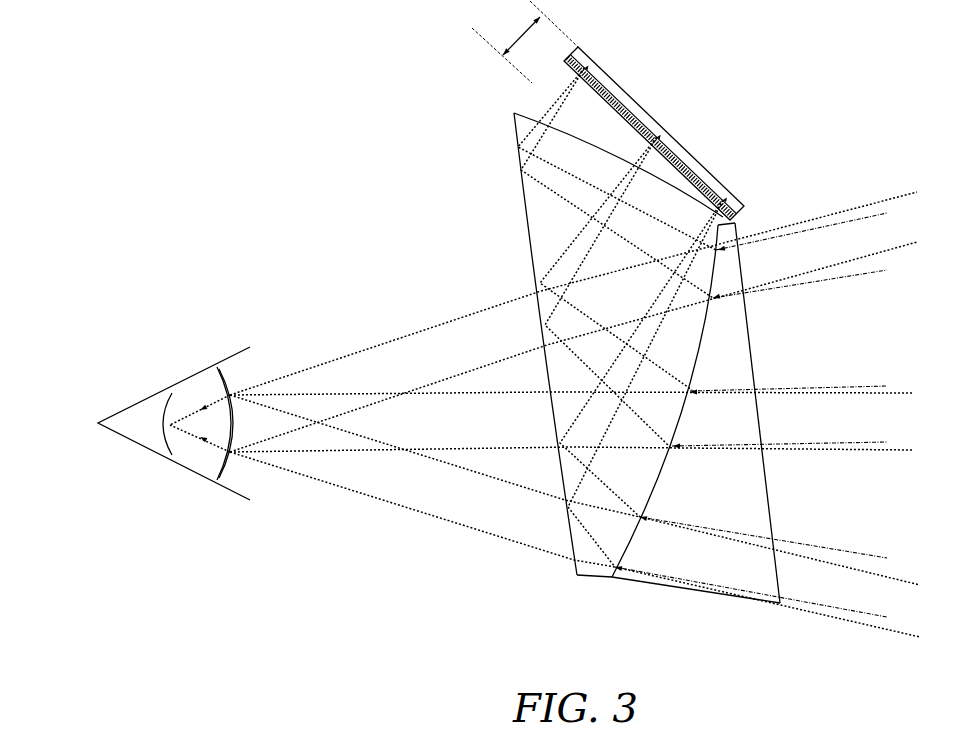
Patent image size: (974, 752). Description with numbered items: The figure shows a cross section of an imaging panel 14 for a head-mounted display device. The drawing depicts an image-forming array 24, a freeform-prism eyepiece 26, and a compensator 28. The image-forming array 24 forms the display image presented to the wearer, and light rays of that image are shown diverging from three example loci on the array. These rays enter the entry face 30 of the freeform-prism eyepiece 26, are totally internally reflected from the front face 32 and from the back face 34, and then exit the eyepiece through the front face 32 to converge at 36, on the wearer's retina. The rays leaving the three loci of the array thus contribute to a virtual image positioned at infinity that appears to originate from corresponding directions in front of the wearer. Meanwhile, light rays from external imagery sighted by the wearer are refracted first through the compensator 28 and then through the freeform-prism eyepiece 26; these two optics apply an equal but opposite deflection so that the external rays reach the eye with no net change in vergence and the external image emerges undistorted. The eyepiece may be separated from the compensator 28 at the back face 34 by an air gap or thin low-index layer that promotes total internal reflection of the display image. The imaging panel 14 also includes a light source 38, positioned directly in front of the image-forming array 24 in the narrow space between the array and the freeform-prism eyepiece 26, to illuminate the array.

The imaging panel 14 is at (278, 146).
The image-forming array 24 is at (694, 157).
The freeform-prism eyepiece 26 is at (505, 218).
The compensator 28 is at (767, 333).
The entry face 30 is at (597, 133).
The front face 32 is at (535, 247).
The back face 34 is at (650, 500).
The wearer's retina 36 is at (143, 383).
The light source 38 is at (728, 221).